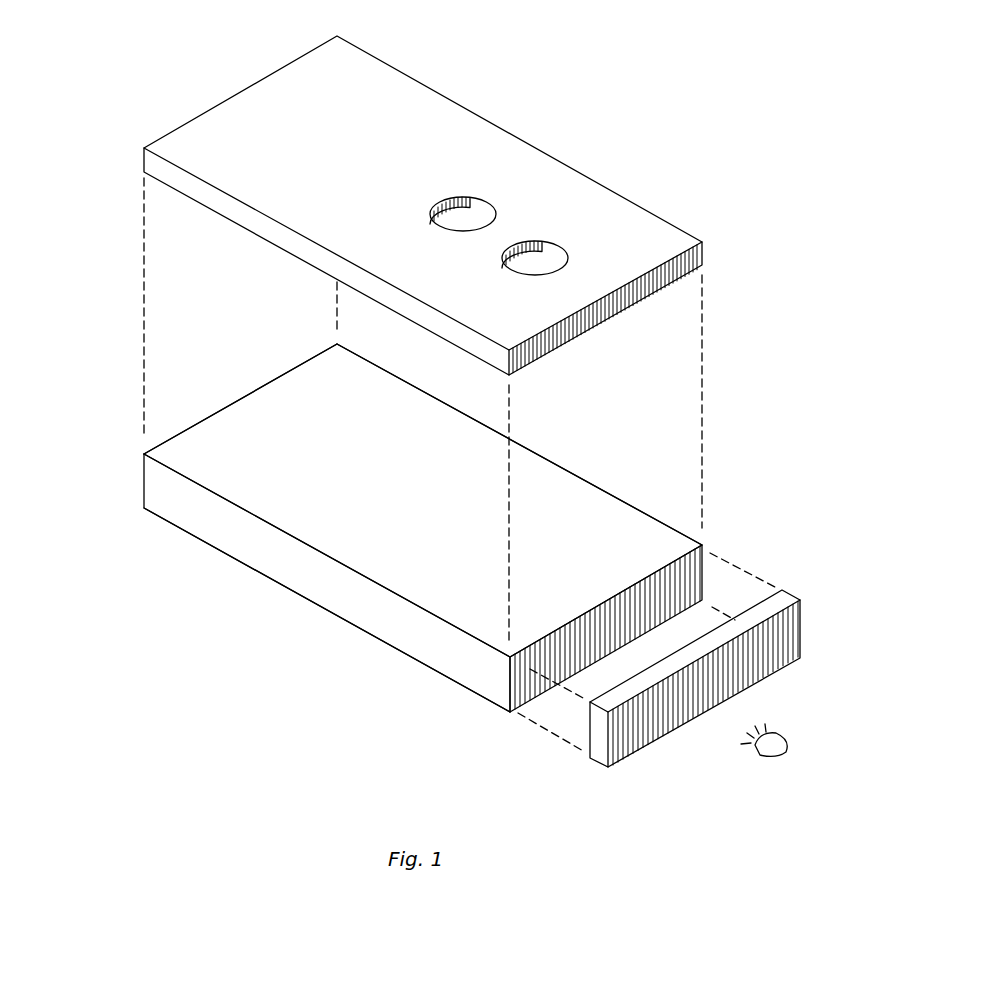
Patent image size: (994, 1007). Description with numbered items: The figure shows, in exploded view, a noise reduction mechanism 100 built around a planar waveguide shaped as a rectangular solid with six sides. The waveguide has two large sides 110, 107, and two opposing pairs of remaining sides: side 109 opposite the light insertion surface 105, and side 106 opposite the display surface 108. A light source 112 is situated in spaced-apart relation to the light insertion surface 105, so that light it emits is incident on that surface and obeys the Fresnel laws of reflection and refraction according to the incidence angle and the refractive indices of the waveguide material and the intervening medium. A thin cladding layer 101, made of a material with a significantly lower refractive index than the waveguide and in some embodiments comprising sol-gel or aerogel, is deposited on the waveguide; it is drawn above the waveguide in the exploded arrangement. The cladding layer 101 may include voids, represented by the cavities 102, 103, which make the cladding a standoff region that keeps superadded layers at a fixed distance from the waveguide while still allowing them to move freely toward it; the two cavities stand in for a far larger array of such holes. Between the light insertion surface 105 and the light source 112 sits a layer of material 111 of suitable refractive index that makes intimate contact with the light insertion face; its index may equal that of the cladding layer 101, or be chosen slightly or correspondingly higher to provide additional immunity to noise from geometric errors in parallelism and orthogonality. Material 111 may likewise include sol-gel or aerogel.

The noise reduction mechanism 100 is at (641, 90).
The cladding layer 101 is at (127, 43).
The cavity 102 is at (475, 198).
The cavity 103 is at (532, 243).
The light insertion surface 105 is at (693, 573).
The side of waveguide 106 is at (205, 533).
The large side of waveguide 107 is at (271, 616).
The display surface 108 is at (542, 452).
The side of waveguide 109 is at (203, 416).
The large side of waveguide 110 is at (352, 420).
The index-matching material layer 111 is at (598, 762).
The light source 112 is at (760, 758).